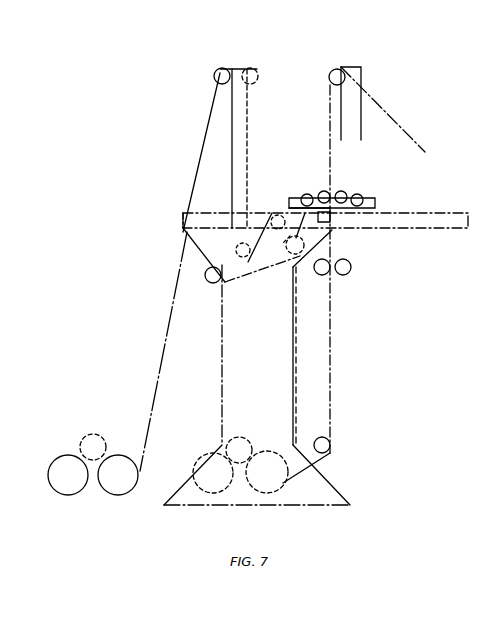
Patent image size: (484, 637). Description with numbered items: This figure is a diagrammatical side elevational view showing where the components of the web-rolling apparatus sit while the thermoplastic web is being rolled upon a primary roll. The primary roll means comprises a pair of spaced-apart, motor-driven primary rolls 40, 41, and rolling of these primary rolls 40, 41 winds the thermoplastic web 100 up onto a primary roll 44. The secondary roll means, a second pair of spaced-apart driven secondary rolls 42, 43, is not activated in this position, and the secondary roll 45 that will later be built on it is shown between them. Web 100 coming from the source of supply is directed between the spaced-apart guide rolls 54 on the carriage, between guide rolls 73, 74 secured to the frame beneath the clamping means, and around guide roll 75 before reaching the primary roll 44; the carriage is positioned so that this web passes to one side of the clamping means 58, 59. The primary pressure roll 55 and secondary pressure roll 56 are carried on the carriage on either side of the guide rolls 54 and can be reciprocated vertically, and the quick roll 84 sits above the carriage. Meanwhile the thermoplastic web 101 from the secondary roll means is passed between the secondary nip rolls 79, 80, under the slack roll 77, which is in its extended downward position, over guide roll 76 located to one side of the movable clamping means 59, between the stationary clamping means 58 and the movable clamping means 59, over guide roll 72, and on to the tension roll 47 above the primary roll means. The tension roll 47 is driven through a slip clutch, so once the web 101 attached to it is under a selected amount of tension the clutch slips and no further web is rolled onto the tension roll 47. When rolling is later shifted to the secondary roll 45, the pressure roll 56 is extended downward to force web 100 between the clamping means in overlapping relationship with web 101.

The primary roll 40 is at (266, 500).
The primary roll 41 is at (204, 456).
The secondary roll 42 is at (70, 495).
The secondary roll 43 is at (110, 495).
The primary roll 44 is at (242, 438).
The secondary roll 45 is at (96, 434).
The tension roll 47 is at (210, 283).
The guide rolls 54 is at (320, 190).
The primary pressure roll 55 is at (302, 194).
The secondary pressure roll 56 is at (360, 194).
The clamping means 58 is at (331, 216).
The movable clamping means 59 is at (288, 240).
The guide roll 72 is at (286, 250).
The guide roll 73 is at (320, 275).
The guide roll 74 is at (350, 262).
The guide roll 75 is at (330, 451).
The guide roll 76 is at (276, 213).
The slack roll 77 is at (237, 246).
The secondary nip roll 79 is at (224, 68).
The secondary nip roll 80 is at (252, 68).
The quick roll 84 is at (335, 69).
The thermoplastic web 100 is at (385, 104).
The thermoplastic web 101 is at (256, 272).